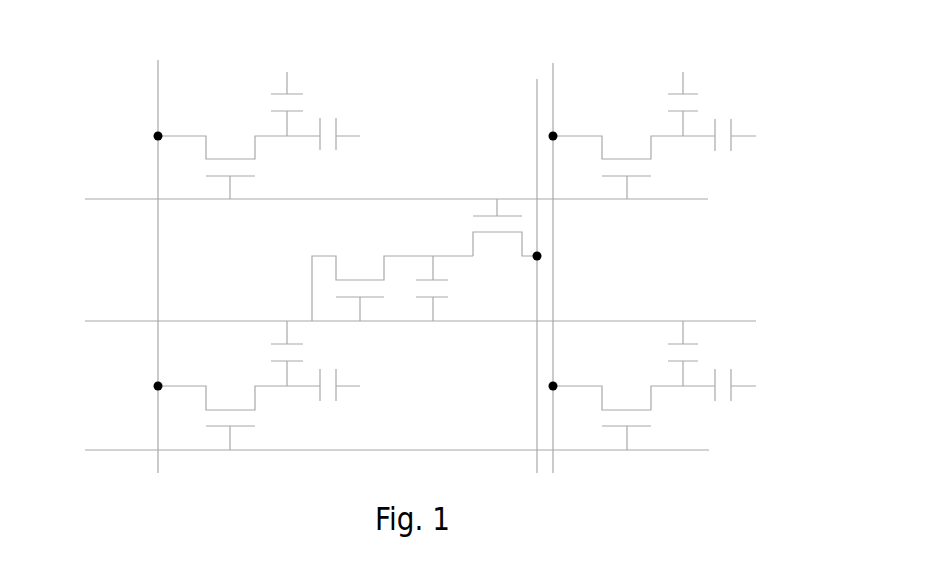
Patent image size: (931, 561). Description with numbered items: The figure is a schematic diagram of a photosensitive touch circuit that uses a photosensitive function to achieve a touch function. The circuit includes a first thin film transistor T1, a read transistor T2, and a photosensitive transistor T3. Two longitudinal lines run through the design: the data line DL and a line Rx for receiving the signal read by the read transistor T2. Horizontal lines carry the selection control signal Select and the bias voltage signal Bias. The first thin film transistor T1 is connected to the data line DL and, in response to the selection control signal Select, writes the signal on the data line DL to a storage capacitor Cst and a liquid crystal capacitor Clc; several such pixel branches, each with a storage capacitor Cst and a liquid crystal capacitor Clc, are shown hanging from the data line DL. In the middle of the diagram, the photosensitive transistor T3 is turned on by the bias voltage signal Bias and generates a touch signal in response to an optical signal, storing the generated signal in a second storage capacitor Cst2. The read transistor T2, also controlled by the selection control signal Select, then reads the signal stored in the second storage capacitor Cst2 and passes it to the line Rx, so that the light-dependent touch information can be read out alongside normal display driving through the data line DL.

The data line DL is at (357, 259).
The line for receiving signal read by transistor T2 Rx is at (535, 268).
The selection control line Select is at (376, 324).
The bias voltage Bias is at (435, 321).
The first thin film transistor T1 is at (257, 416).
The read transistor T2 is at (507, 230).
The photosensitive transistor T3 is at (392, 288).
The storage capacitor Cst is at (498, 229).
The second storage capacitor Cst2 is at (449, 288).
The liquid crystal capacitor Clc is at (526, 267).